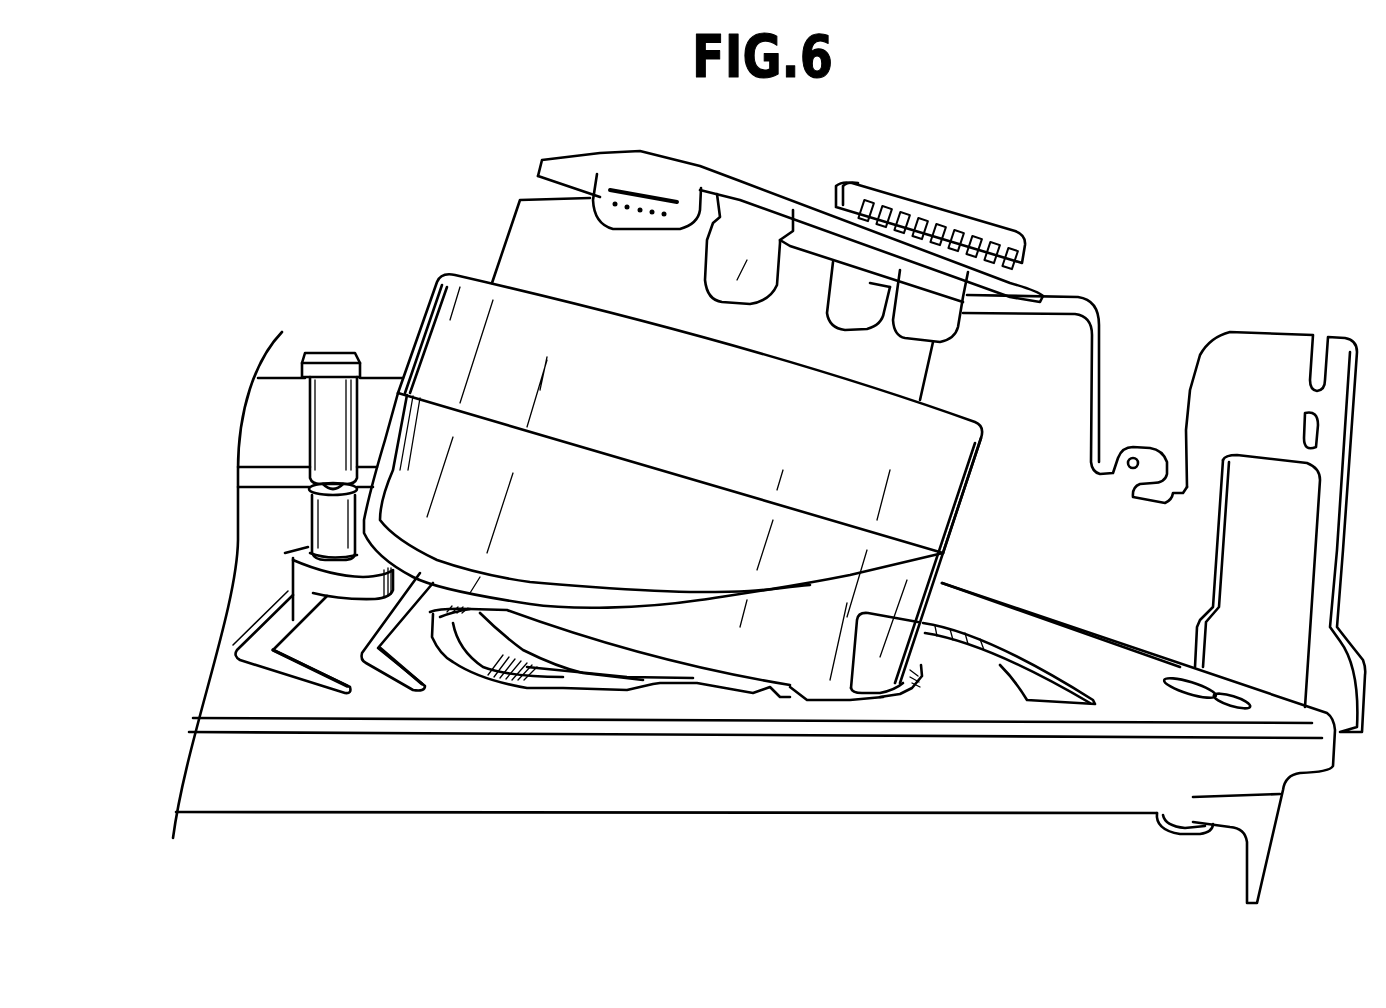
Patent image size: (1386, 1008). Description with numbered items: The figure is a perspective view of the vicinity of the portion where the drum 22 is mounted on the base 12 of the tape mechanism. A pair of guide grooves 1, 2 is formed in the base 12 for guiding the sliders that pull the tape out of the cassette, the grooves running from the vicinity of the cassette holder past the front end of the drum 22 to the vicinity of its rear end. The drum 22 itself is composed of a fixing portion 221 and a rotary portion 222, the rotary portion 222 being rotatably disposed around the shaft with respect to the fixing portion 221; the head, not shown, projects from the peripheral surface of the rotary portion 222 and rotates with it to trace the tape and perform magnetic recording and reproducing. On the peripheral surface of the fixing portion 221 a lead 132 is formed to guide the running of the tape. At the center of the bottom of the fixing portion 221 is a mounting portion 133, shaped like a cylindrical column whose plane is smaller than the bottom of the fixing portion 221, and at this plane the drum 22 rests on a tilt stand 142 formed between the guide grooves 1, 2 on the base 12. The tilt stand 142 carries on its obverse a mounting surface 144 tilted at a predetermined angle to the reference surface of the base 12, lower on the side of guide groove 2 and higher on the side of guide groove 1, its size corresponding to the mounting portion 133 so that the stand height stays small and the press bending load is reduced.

The guide groove 1 is at (280, 670).
The guide groove 2 is at (1002, 664).
The base 12 is at (1083, 713).
The drum 22 is at (443, 333).
The lead 132 is at (630, 600).
The mounting portion 133 is at (642, 660).
The tilt stand 142 is at (523, 657).
The mounting surface 144 is at (557, 653).
The fixing portion 221 is at (910, 600).
The rotary portion 222 is at (940, 480).